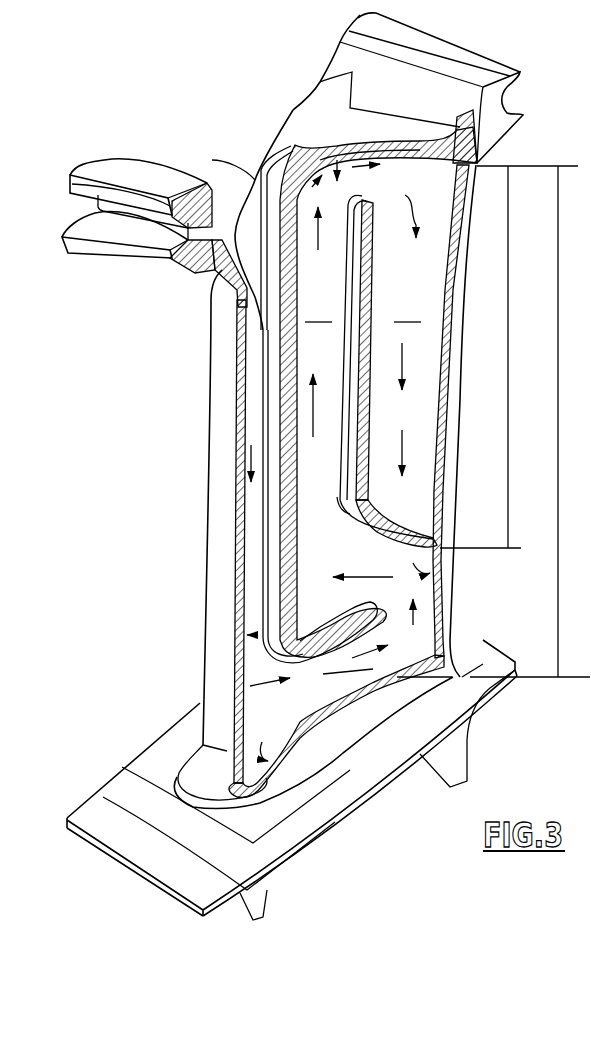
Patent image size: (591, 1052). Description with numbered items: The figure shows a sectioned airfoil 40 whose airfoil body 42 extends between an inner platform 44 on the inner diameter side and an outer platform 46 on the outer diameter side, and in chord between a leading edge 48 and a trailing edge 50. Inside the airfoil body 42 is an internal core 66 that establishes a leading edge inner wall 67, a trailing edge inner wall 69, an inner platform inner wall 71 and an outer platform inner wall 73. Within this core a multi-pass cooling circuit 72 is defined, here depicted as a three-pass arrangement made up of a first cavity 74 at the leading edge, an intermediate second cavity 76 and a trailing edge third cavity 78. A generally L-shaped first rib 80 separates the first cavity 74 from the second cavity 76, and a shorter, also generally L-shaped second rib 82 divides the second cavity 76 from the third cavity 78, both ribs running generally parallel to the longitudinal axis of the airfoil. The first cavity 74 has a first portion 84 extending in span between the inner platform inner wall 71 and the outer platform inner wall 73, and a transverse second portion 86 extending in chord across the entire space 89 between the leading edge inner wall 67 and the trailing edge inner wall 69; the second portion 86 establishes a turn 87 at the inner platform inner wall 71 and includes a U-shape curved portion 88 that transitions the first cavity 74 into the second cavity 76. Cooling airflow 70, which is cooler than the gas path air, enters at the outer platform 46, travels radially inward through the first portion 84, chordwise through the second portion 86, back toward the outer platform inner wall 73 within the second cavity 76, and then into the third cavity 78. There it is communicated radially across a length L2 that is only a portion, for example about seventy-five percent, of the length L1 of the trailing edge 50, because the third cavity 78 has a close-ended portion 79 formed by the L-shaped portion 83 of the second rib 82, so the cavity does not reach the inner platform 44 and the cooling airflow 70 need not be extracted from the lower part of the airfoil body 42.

The airfoil 40 is at (232, 74).
The airfoil body 42 is at (211, 307).
The inner platform 44 is at (453, 726).
The outer platform 46 is at (489, 93).
The leading edge 48 is at (211, 364).
The trailing edge 50 is at (466, 303).
The internal core 66 is at (337, 170).
The leading edge inner wall 67 is at (258, 648).
The trailing edge inner wall 69 is at (440, 566).
The cooling airflow 70 is at (352, 167).
The inner platform inner wall 71 is at (258, 772).
The cooling circuit 72 is at (244, 170).
The outer platform inner wall 73 is at (296, 140).
The first cavity 74 is at (250, 395).
The second cavity 76 is at (318, 310).
The third cavity 78 is at (407, 310).
The close-ended portion 79 is at (420, 520).
The first rib 80 is at (281, 233).
The second rib 82 is at (372, 263).
The L-shaped portion 83 is at (392, 539).
The first portion 84 is at (248, 535).
The second portion 86 is at (310, 678).
The turn 87 is at (263, 671).
The U-shape curved portion 88 is at (397, 589).
The space 89 is at (356, 661).
The length of the trailing edge L1 is at (530, 421).
The length of the third cavity L2 is at (480, 357).